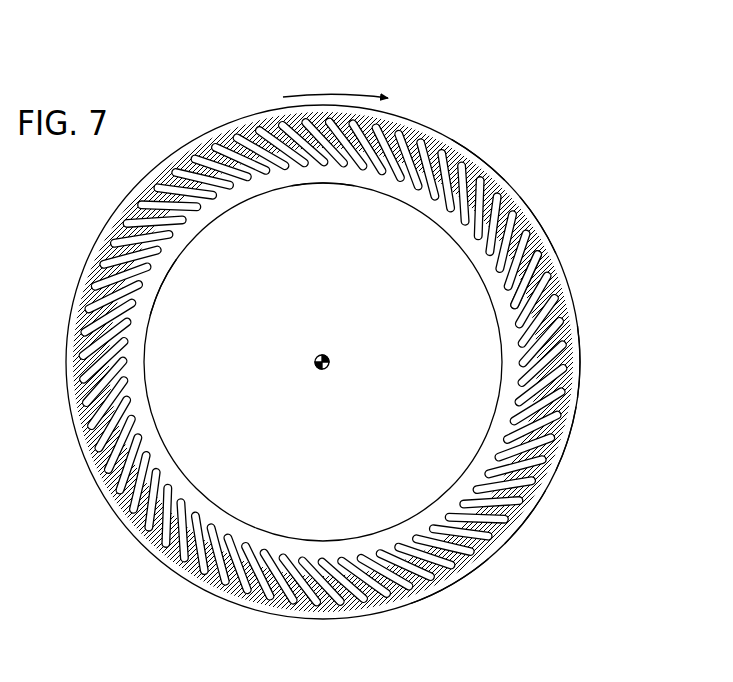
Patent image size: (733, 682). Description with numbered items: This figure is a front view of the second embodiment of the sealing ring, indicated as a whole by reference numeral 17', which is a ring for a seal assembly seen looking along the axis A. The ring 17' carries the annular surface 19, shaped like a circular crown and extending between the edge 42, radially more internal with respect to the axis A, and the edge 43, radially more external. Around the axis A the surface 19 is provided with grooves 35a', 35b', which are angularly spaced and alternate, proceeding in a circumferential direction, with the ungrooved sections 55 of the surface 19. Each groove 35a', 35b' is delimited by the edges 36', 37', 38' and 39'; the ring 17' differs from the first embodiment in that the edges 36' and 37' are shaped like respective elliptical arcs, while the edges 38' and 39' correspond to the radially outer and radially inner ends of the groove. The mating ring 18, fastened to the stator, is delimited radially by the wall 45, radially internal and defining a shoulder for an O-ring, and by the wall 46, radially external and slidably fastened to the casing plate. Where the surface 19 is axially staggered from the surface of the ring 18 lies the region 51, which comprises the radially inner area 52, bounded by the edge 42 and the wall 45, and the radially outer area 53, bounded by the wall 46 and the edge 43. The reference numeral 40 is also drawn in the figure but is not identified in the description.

The ring 17' is at (636, 328).
The ring 18 is at (537, 254).
The surface 19 is at (338, 173).
The groove 35a' is at (441, 125).
The groove 35b' is at (441, 145).
The edge 36' is at (508, 339).
The edge 37' is at (578, 351).
The edge 38' is at (567, 285).
The edge 39' is at (496, 296).
The outer rim 40 is at (525, 517).
The edge 42 is at (178, 267).
The edge 43 is at (242, 116).
The wall 45 is at (423, 548).
The wall 46 is at (568, 427).
The region 51 is at (535, 173).
The radially inner area 52 is at (250, 187).
The radially outer area 53 is at (540, 223).
The ungrooved sections 55 is at (330, 595).
The axis A is at (330, 356).